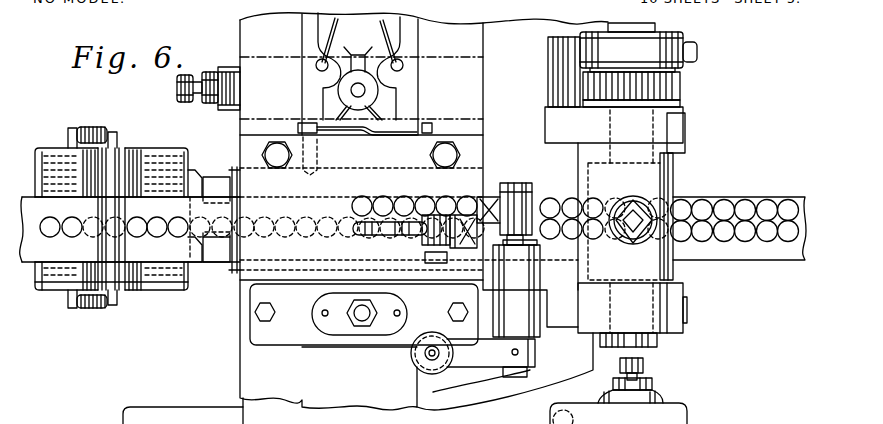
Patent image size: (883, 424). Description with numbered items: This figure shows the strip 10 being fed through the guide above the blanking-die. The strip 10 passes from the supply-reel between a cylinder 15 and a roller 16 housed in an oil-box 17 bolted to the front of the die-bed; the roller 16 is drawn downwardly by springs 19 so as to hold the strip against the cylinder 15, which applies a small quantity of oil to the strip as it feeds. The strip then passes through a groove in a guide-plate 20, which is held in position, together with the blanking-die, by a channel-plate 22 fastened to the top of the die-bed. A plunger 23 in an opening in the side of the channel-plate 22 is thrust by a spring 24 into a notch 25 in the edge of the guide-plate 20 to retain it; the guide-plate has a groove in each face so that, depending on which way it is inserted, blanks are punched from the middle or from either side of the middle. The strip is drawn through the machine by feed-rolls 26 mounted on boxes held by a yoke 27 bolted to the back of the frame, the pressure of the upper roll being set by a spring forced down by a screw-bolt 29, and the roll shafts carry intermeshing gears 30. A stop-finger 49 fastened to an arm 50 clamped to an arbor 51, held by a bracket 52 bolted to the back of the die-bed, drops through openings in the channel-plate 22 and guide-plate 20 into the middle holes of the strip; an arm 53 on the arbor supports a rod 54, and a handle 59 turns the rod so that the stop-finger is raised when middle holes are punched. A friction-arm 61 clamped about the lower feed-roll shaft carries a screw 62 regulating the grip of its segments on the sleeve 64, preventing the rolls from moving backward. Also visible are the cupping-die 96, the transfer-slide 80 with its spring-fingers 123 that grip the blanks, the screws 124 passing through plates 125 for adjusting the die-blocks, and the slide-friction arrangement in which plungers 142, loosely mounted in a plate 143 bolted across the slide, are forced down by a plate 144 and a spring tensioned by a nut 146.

The strip 10 is at (252, 229).
The cylinder 15 is at (88, 170).
The roller 16 is at (128, 157).
The oil-box 17 is at (167, 288).
The springs 19 is at (97, 128).
The guide-plate 20 is at (234, 273).
The channel-plate 22 is at (424, 211).
The plunger 23 is at (316, 150).
The spring 24 is at (362, 131).
The notch 25 is at (313, 172).
The feed-rolls 26 is at (673, 268).
The yoke 27 is at (687, 310).
The screw-bolt 29 is at (650, 212).
The intermeshing gears 30 is at (680, 90).
The stop-finger 49 is at (373, 229).
The arm 50 is at (470, 242).
The arbor 51 is at (515, 377).
The bracket 52 is at (516, 286).
The arm 53 is at (491, 353).
The rod 54 is at (430, 353).
The handle 59 is at (425, 368).
The friction-arm 61 is at (615, 69).
The screw 62 is at (697, 51).
The sleeve 64 is at (660, 28).
The transfer-slide 80 is at (332, 350).
The cupping-die 96 is at (340, 93).
The spring-fingers 123 is at (359, 40).
The screws 124 is at (198, 75).
The plates 125 is at (230, 107).
The plungers 142 is at (323, 315).
The plate 143 is at (270, 344).
The plate 144 is at (320, 300).
The nut 146 is at (378, 313).